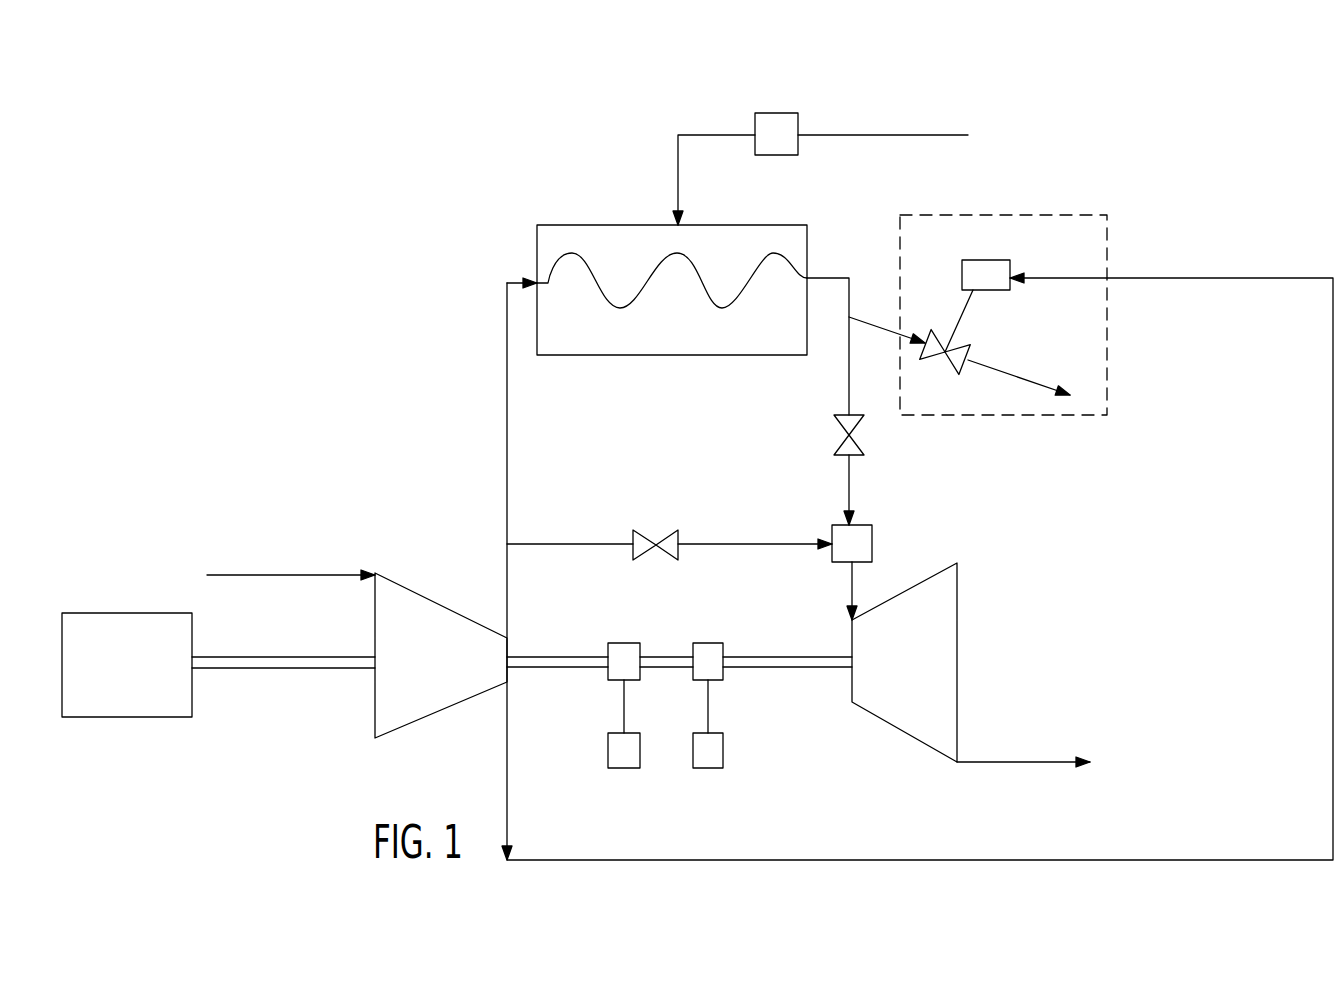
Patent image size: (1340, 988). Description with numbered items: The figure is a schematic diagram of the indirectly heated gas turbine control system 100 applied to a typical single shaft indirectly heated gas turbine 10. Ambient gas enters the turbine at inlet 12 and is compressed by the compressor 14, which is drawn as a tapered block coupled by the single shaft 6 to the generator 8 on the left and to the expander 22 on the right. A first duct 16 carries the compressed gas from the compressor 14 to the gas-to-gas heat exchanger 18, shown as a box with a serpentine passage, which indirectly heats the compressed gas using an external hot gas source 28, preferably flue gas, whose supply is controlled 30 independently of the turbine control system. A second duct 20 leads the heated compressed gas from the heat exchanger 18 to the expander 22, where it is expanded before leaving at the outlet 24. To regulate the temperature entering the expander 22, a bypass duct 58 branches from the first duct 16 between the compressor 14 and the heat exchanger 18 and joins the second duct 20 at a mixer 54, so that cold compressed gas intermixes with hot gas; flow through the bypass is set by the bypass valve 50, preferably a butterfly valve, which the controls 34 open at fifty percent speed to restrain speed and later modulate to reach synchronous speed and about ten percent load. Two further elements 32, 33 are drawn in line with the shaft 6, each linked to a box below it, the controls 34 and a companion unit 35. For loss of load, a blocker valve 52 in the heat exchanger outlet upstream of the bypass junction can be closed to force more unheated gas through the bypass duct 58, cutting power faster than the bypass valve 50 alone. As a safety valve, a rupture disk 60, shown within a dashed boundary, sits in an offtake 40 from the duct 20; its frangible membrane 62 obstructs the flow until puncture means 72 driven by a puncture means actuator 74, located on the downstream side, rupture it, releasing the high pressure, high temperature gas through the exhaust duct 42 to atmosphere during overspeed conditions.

The indirectly heated gas turbine control system 100 is at (435, 300).
The indirectly heated gas turbine 10 is at (350, 745).
The generator 8 is at (130, 673).
The inlet 12 is at (262, 575).
The compressor 14 is at (446, 672).
The first duct 16 is at (507, 415).
The gas-to-gas heat exchanger 18 is at (693, 332).
The hot gas source control 30 is at (775, 122).
The external hot gas source 28 is at (862, 133).
The second duct 20 is at (849, 368).
The blocker valve 52 is at (834, 425).
The mixer 54 is at (862, 532).
The bypass duct 58 is at (720, 544).
The bypass valve 50 is at (640, 537).
The offtake 40 is at (873, 322).
The exhaust duct 42 is at (1005, 368).
The rupture disk 60 is at (1060, 215).
The frangible membrane 62 is at (970, 340).
The puncture means 72 is at (1021, 258).
The puncture means actuator 74 is at (978, 260).
The expander 22 is at (926, 677).
The outlet 24 is at (1028, 762).
The single shaft 6 is at (786, 668).
The speed sensor 32 is at (628, 645).
The torque sensor 33 is at (708, 645).
The controls 34 is at (624, 758).
The sensor controller 35 is at (708, 758).